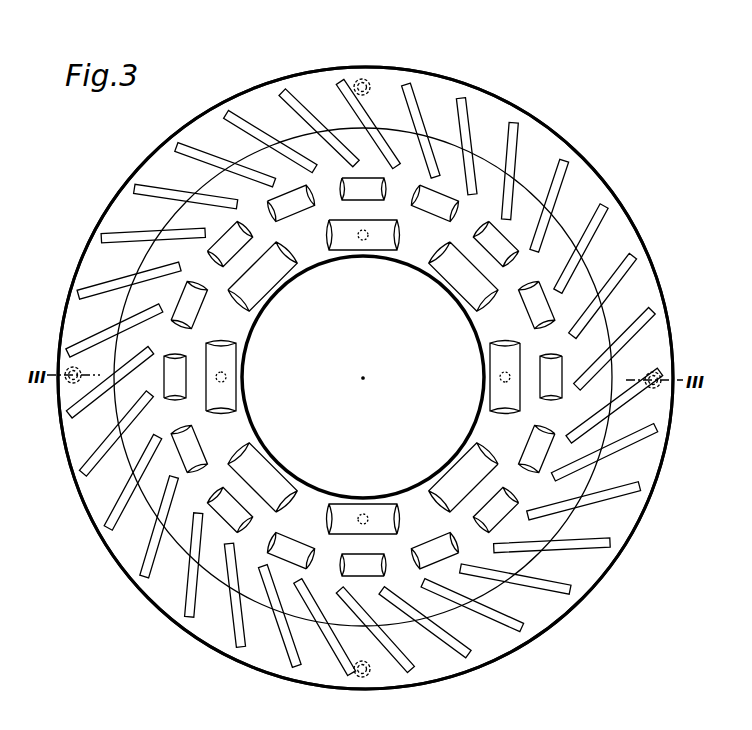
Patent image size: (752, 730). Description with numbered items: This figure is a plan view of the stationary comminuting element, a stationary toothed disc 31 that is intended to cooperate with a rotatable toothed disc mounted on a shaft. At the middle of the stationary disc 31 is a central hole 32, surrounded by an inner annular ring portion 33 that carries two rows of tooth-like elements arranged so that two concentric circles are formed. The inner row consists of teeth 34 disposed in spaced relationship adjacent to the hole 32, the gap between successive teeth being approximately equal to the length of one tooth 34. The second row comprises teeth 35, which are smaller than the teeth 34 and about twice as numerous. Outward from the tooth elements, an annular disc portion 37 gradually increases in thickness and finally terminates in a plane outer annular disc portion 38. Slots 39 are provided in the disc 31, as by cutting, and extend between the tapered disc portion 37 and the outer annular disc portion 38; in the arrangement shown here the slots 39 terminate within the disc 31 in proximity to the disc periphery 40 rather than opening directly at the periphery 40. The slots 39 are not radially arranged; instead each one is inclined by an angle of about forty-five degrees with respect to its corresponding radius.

The stationary toothed disc 31 is at (662, 510).
The central hole 32 is at (470, 368).
The inner annular ring portion 33 is at (502, 287).
The teeth 34 is at (512, 392).
The teeth 35 is at (553, 293).
The annular disc portion 37 is at (528, 563).
The outer annular disc portion 38 is at (600, 527).
The slots 39 is at (103, 287).
The disc periphery 40 is at (263, 686).